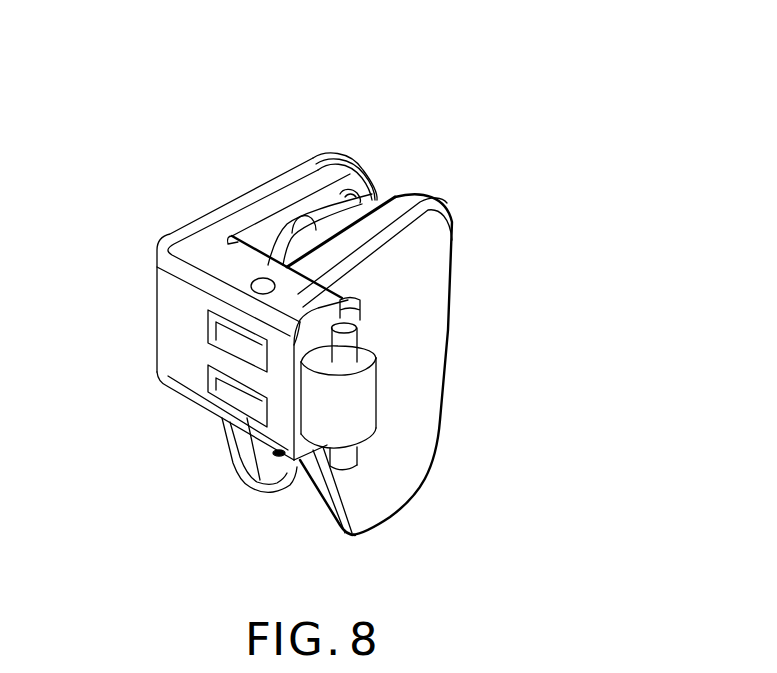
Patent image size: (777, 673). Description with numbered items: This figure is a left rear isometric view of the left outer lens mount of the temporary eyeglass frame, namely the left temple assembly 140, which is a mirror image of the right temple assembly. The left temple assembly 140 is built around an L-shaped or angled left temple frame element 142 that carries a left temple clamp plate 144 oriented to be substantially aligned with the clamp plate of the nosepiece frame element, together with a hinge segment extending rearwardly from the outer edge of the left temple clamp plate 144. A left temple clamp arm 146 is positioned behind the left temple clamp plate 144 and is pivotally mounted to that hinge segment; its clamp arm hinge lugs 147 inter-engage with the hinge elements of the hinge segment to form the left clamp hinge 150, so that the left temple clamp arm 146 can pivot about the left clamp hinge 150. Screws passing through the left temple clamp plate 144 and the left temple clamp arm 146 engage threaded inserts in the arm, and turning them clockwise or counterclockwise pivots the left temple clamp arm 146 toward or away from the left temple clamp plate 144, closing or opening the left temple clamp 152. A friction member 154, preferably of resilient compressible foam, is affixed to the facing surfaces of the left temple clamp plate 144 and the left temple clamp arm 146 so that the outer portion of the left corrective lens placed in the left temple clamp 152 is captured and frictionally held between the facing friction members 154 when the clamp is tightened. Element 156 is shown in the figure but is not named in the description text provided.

The left temple assembly 140 is at (523, 120).
The left temple frame element 142 is at (157, 312).
The left temple clamp plate 144 is at (372, 176).
The left temple clamp arm 146 is at (440, 428).
The clamp arm hinge lugs 147 is at (220, 332).
The left clamp hinge 150 is at (261, 278).
The left temple clamp 152 is at (392, 188).
The friction member 154 is at (323, 210).
The hinge pin 156 is at (377, 387).